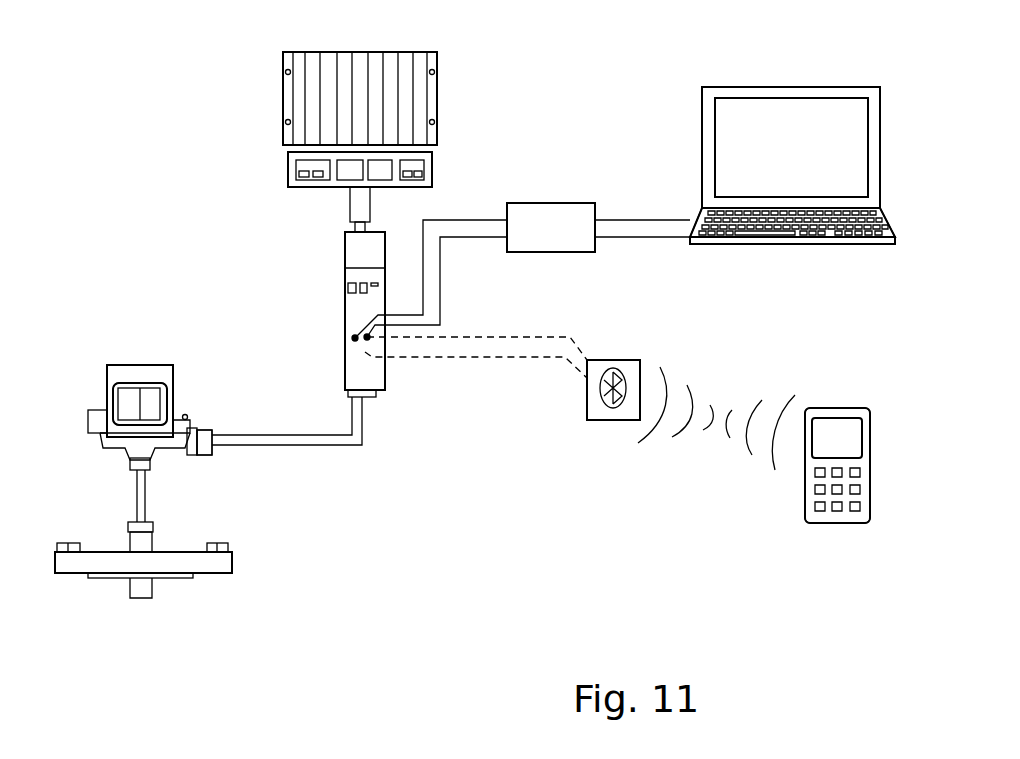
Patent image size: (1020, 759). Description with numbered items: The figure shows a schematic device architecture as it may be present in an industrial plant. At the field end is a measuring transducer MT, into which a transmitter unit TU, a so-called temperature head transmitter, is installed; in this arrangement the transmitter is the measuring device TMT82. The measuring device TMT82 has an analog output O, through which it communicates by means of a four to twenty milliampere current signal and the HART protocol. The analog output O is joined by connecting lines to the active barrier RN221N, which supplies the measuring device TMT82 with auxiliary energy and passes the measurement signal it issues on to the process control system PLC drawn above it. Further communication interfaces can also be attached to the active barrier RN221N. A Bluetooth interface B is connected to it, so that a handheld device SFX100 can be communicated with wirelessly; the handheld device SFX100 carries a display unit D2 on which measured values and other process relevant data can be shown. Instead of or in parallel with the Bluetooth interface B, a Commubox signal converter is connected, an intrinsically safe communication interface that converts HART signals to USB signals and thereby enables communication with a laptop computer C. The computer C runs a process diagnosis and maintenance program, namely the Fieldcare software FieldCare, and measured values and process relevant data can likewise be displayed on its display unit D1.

The process control system PLC is at (297, 93).
The active barrier RN221N is at (350, 318).
The Commubox signal converter Commubox is at (540, 205).
The display unit D1 is at (778, 112).
The Fieldcare software FieldCare is at (722, 121).
The computer C is at (793, 250).
The Bluetooth interface B is at (600, 420).
The handheld device SFX100 is at (797, 520).
The display unit D2 is at (831, 523).
The measuring device TMT82 is at (150, 402).
The transmitter unit TU is at (123, 400).
The analog output O is at (200, 455).
The measuring transducer MT is at (160, 578).